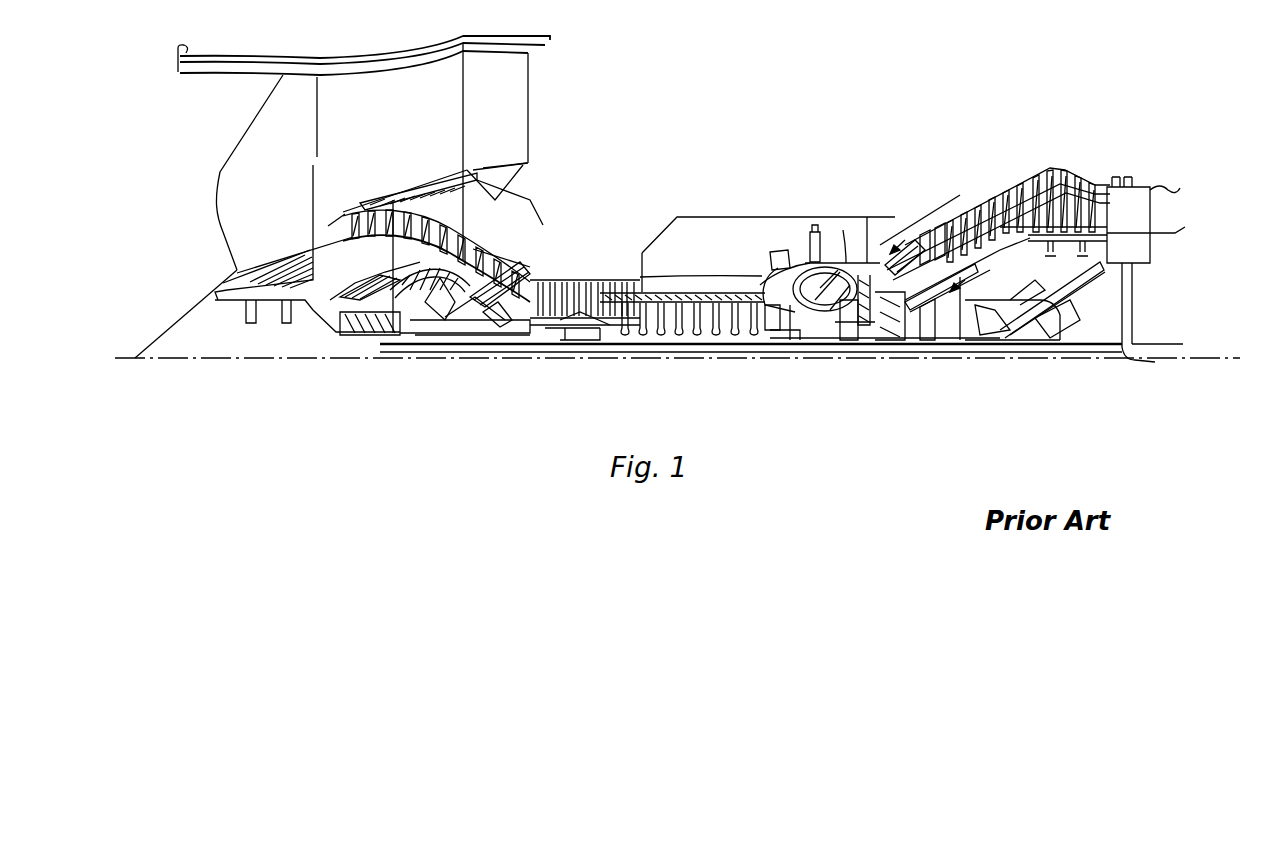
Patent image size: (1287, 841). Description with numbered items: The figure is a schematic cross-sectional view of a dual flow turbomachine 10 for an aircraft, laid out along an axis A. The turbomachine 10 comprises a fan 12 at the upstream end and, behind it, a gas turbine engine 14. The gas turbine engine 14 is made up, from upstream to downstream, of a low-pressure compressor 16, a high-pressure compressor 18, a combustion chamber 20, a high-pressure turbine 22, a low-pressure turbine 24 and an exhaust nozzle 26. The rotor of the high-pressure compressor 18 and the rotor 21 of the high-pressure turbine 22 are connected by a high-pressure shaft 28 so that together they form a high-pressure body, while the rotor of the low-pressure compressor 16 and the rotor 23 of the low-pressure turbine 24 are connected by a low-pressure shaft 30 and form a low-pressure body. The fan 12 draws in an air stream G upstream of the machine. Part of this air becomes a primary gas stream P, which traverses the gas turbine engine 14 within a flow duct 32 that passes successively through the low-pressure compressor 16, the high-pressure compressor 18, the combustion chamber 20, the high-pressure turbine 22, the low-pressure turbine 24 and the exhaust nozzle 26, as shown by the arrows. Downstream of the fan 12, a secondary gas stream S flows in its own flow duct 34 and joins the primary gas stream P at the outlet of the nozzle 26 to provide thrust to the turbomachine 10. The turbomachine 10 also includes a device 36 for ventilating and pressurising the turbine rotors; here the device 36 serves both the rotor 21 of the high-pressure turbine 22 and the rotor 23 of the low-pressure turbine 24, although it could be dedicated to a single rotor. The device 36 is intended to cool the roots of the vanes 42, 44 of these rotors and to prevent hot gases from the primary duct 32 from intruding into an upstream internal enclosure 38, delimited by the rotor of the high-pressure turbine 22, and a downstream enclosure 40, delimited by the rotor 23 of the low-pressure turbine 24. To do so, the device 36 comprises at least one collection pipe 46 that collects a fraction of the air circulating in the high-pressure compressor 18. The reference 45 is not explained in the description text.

The dual flow turbomachine 10 is at (793, 128).
The fan 12 is at (205, 205).
The gas turbine engine 14 is at (575, 268).
The low-pressure compressor 16 is at (380, 336).
The high-pressure compressor 18 is at (618, 305).
The combustion chamber 20 is at (800, 350).
The rotor of the high-pressure turbine 21 is at (862, 245).
The high-pressure turbine 22 is at (858, 342).
The rotor of the low-pressure turbine 23 is at (1046, 175).
The low-pressure turbine 24 is at (1000, 195).
The exhaust nozzle 26 is at (1175, 194).
The high-pressure shaft 28 is at (767, 357).
The low-pressure shaft 30 is at (691, 350).
The flow duct of the primary gas stream 32 is at (452, 275).
The flow duct of the secondary gas stream 34 is at (407, 142).
The device for ventilating and pressurising a turbine rotor 36 is at (886, 210).
The upstream internal enclosure 38 is at (935, 345).
The downstream enclosure 40 is at (990, 347).
The vanes of the high-pressure turbine rotor 42 is at (867, 337).
The vanes of the low-pressure turbine rotor 44 is at (1032, 347).
The diffuser 45 is at (905, 233).
The collection pipe 46 is at (700, 215).
The axis A is at (1228, 356).
The air stream G is at (207, 118).
The secondary gas stream S is at (490, 113).
The primary gas stream P is at (521, 286).